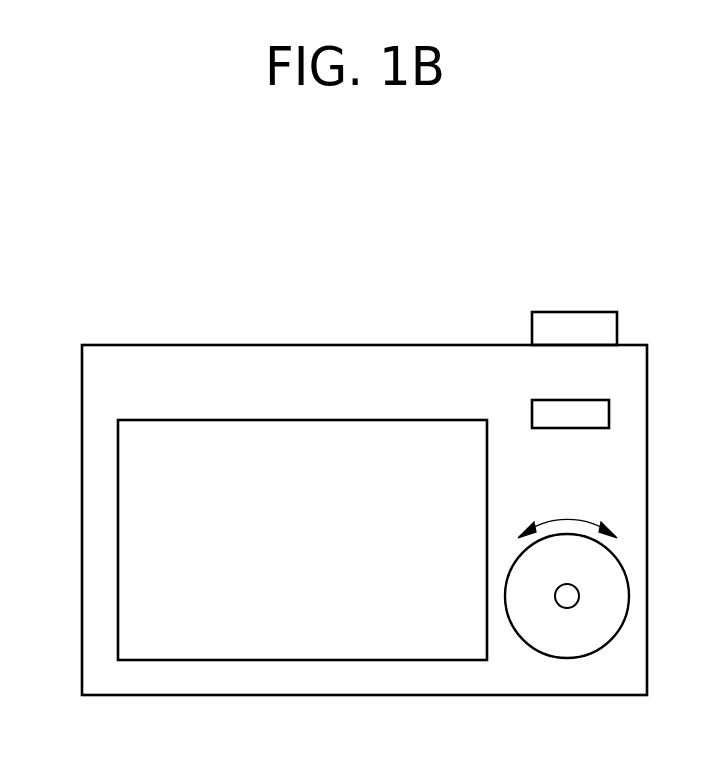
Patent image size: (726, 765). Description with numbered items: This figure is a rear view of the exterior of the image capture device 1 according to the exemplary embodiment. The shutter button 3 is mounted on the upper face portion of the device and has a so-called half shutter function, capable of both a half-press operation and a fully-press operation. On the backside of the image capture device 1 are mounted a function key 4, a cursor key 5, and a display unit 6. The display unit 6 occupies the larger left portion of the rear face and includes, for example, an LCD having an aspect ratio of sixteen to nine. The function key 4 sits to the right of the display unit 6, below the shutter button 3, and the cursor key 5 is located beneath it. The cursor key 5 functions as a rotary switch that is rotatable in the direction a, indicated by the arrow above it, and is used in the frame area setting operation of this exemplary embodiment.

The image capture device 1 is at (131, 343).
The shutter button 3 is at (570, 312).
The function key 4 is at (609, 400).
The cursor key 5 is at (620, 560).
The display unit 6 is at (371, 419).
The direction a is at (567, 515).